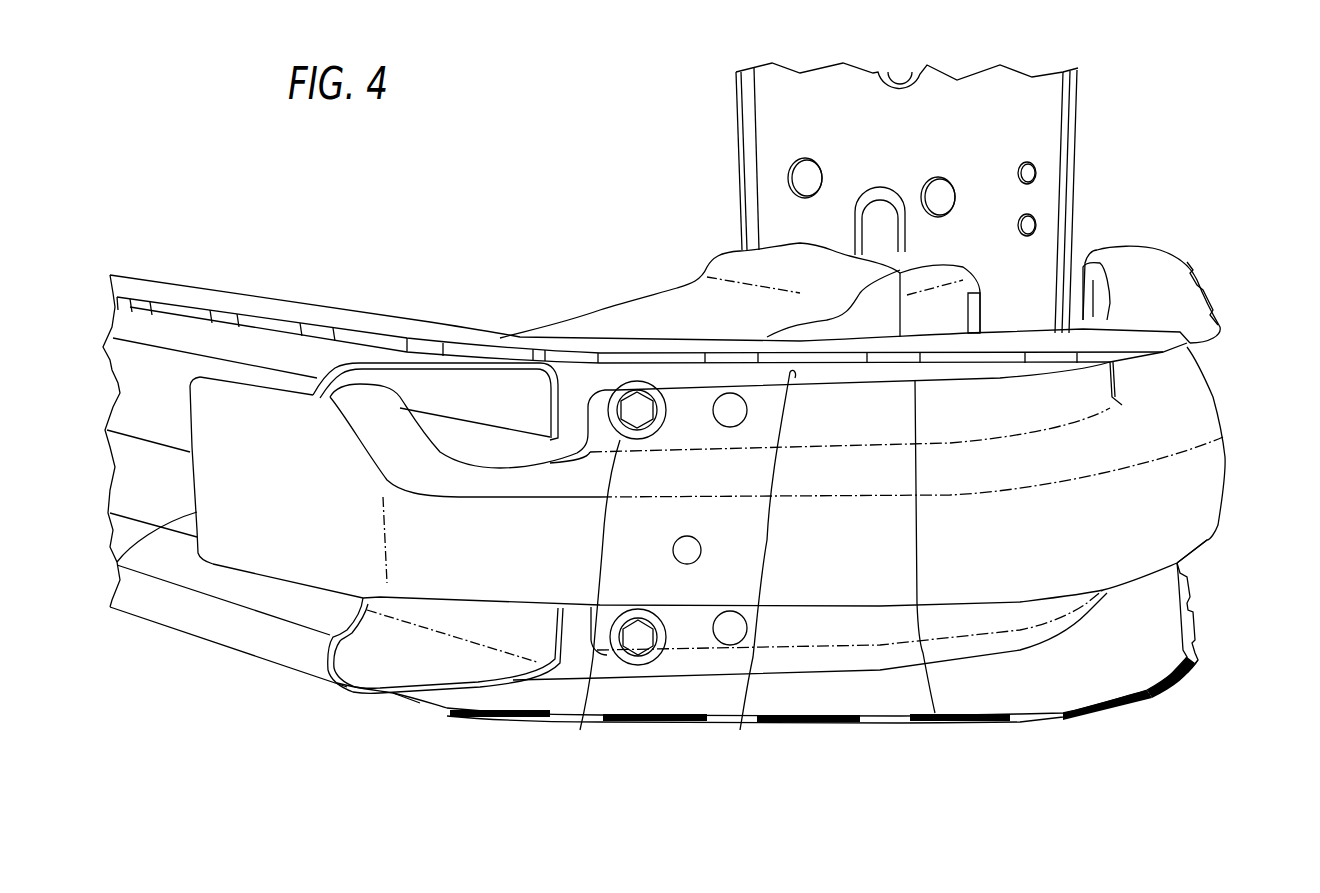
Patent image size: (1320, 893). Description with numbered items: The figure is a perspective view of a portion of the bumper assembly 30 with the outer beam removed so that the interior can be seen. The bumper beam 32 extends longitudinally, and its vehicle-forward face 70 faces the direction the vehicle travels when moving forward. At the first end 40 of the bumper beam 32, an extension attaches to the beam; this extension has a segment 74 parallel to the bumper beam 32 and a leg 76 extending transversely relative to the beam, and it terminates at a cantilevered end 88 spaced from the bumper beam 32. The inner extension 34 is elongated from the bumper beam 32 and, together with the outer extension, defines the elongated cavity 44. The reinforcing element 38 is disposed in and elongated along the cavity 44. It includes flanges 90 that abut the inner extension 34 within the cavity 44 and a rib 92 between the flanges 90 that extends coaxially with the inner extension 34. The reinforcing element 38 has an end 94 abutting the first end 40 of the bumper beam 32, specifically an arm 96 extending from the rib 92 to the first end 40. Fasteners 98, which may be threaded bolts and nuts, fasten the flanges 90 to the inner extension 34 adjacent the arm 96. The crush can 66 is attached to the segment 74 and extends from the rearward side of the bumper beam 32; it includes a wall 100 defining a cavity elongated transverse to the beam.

The bumper assembly 30 is at (253, 740).
The bumper beam 32 is at (143, 620).
The inner extension 34 is at (1037, 722).
The reinforcing element 38 is at (1231, 468).
The first end 40 is at (360, 687).
The cavity 44 is at (1140, 650).
The crush can 66 is at (642, 298).
The vehicle-forward face 70 is at (143, 470).
The segment 74 is at (215, 290).
The leg 76 is at (817, 723).
The cantilevered end 88 is at (1140, 244).
The flanges 90 is at (813, 647).
The rib 92 is at (935, 713).
The end 94 is at (117, 563).
The arm 96 is at (247, 577).
The fasteners 98 is at (625, 662).
The wall 100 is at (562, 325).